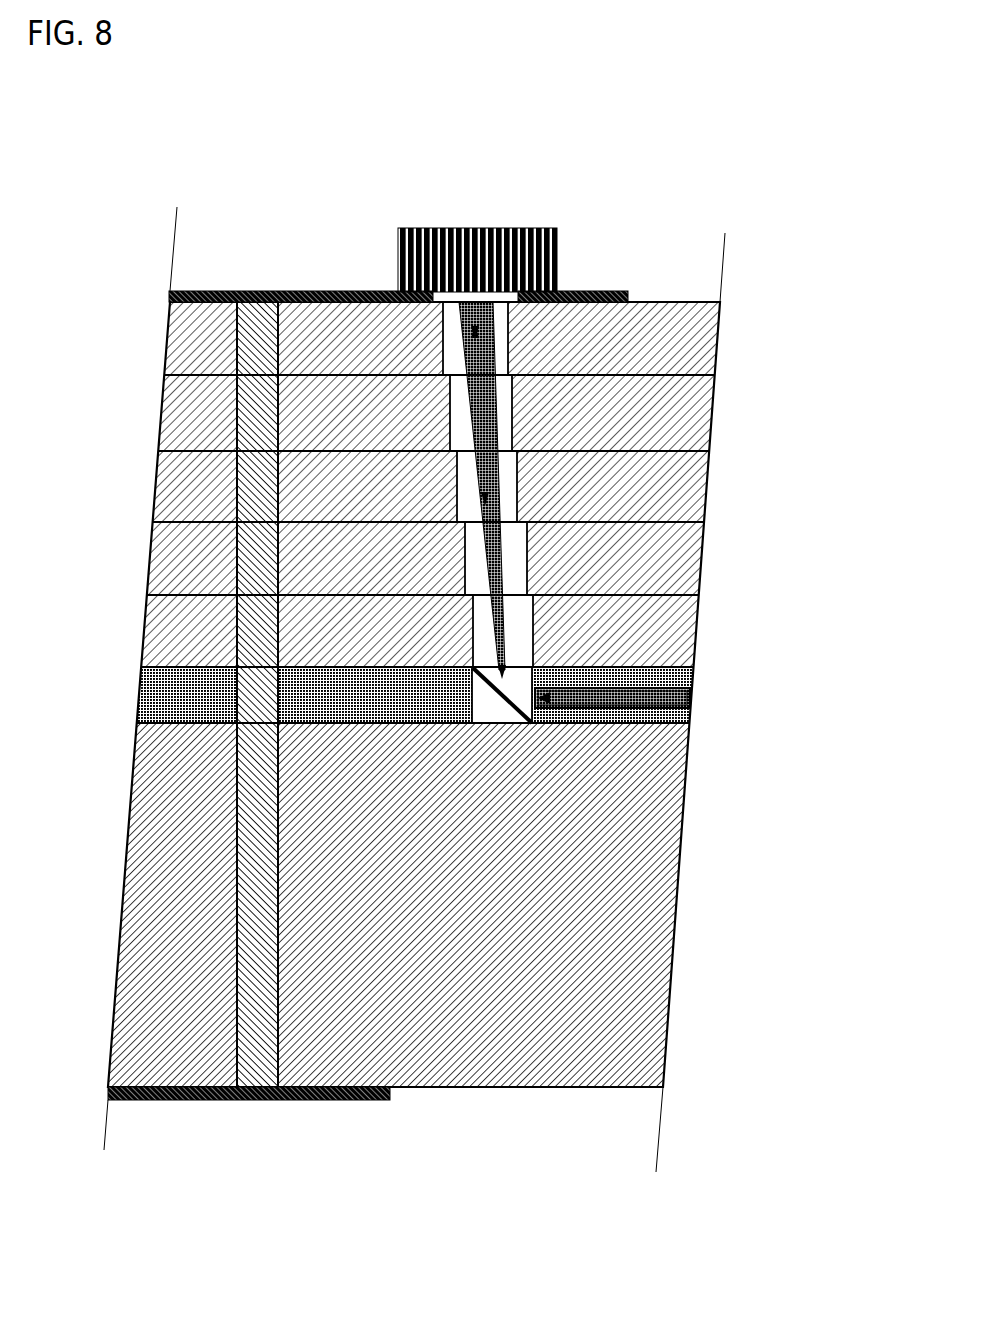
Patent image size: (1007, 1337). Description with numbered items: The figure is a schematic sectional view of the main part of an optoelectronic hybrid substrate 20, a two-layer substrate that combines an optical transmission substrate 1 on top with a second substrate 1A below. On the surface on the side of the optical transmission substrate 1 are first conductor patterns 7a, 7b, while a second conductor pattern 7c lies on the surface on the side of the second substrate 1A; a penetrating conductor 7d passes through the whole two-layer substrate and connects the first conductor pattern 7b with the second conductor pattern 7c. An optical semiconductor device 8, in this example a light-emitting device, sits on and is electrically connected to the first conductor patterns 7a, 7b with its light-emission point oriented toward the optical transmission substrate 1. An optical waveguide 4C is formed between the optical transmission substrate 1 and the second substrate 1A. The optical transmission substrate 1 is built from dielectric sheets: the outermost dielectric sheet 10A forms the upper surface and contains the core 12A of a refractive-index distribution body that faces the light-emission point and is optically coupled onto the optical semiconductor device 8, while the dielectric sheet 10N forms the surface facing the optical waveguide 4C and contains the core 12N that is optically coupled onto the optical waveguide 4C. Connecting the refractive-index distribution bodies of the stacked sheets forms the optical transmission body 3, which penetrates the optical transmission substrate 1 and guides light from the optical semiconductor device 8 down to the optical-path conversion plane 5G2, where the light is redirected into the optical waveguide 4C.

The optoelectronic hybrid substrate 20 is at (341, 181).
The optical semiconductor device 8 is at (478, 240).
The first conductor pattern 7a is at (588, 291).
The first conductor pattern 7b is at (258, 290).
The second conductor pattern 7c is at (190, 1100).
The penetrating conductor 7d is at (248, 617).
The outermost dielectric sheet 10A is at (627, 335).
The core of the refractive-index distribution body 12A is at (480, 359).
The optical transmission body 3 is at (530, 487).
The optical transmission substrate 1 is at (493, 483).
The dielectric sheet 10N is at (657, 622).
The core of the refractive-index distribution body 12N is at (516, 642).
The optical waveguide 4C is at (472, 765).
The wiring conductor 5G2 is at (687, 803).
The second substrate 1A is at (512, 936).